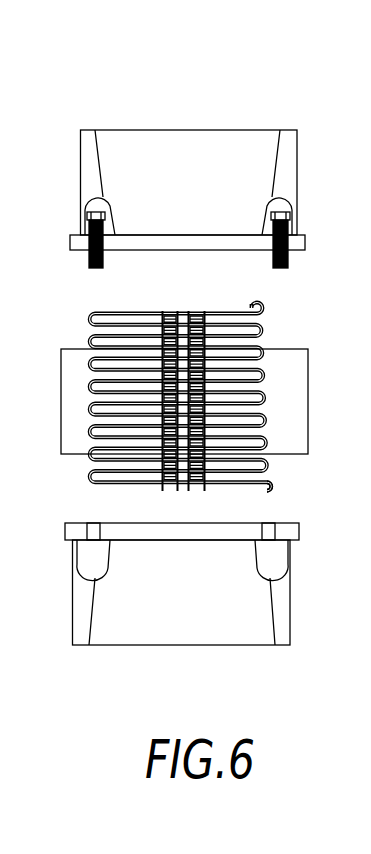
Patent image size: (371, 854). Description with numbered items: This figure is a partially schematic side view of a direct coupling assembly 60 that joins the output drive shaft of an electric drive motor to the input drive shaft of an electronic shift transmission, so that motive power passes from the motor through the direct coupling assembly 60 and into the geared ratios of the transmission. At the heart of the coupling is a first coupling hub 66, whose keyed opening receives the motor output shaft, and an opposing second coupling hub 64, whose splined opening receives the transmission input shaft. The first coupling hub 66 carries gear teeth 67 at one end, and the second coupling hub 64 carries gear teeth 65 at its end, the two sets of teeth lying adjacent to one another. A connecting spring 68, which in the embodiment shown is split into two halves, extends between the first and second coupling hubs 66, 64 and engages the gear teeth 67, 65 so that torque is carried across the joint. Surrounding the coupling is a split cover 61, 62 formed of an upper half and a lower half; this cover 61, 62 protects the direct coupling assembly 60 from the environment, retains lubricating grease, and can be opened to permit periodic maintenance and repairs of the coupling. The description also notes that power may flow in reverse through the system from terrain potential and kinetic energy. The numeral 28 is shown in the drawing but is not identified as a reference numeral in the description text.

The direct coupling assembly 60 is at (174, 103).
The split cover 61 is at (243, 143).
The split cover 62 is at (133, 631).
The heat exchanger core 28 is at (298, 327).
The second coupling hub 64 is at (267, 418).
The gear teeth 65 is at (197, 490).
The first coupling hub 66 is at (73, 360).
The gear teeth 67 is at (167, 490).
The connecting spring 68 is at (274, 487).